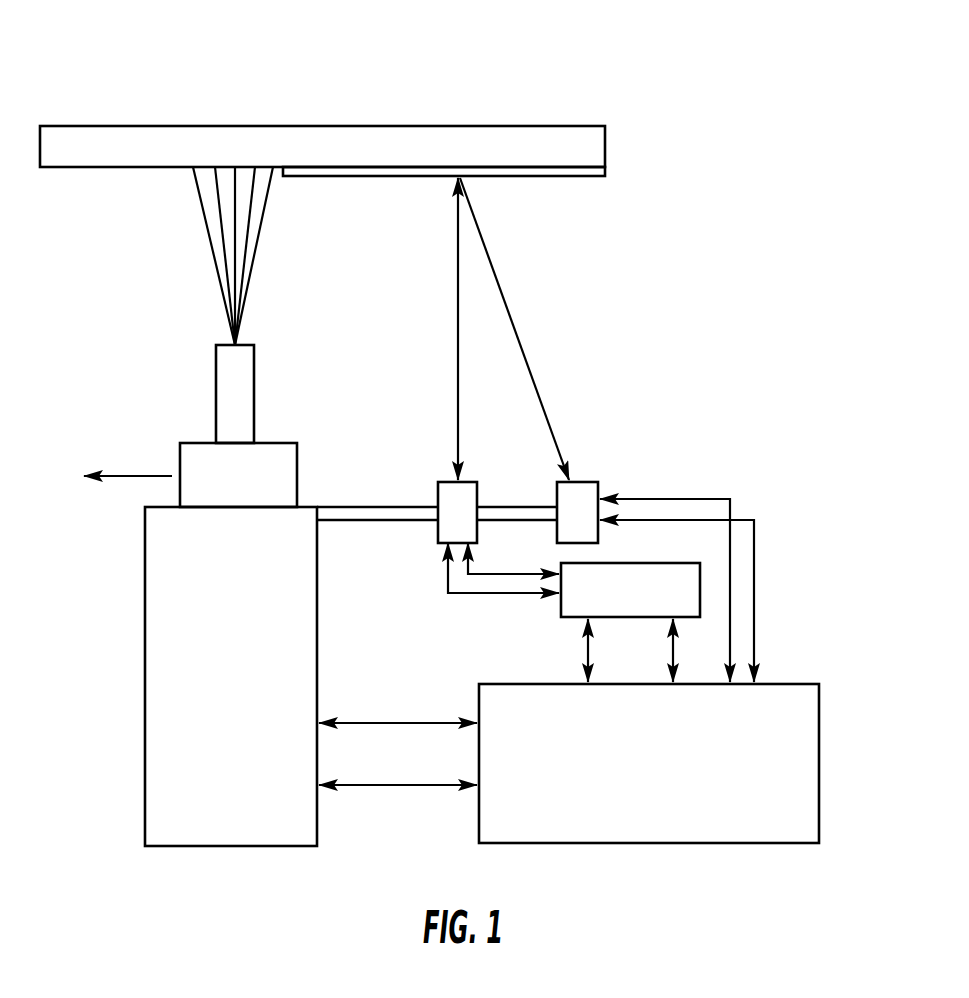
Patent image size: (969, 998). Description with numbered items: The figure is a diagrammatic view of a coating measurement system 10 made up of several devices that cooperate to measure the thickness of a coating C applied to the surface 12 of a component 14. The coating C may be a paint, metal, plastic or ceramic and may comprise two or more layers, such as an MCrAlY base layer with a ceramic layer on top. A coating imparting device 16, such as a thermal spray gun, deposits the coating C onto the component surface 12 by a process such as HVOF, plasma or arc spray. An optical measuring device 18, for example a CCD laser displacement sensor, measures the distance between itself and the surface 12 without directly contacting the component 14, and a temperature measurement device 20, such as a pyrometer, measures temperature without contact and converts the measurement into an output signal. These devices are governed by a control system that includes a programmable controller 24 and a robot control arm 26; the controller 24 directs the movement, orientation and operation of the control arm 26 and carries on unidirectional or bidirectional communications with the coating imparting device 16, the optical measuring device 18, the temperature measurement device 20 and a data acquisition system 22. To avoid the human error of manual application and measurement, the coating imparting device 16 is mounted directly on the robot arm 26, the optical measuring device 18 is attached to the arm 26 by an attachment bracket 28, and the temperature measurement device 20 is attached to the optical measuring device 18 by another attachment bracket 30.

The coating measurement system 10 is at (163, 87).
The surface 12 is at (118, 170).
The component 14 is at (612, 141).
The coating C is at (386, 177).
The coating imparting device 16 is at (216, 400).
The optical measuring device 18 is at (460, 512).
The temperature measurement device 20 is at (585, 497).
The data acquisition system 22 is at (806, 786).
The controller 24 is at (560, 615).
The control arm 26 is at (175, 628).
The attachment bracket 28 is at (362, 517).
The attachment bracket 30 is at (520, 505).